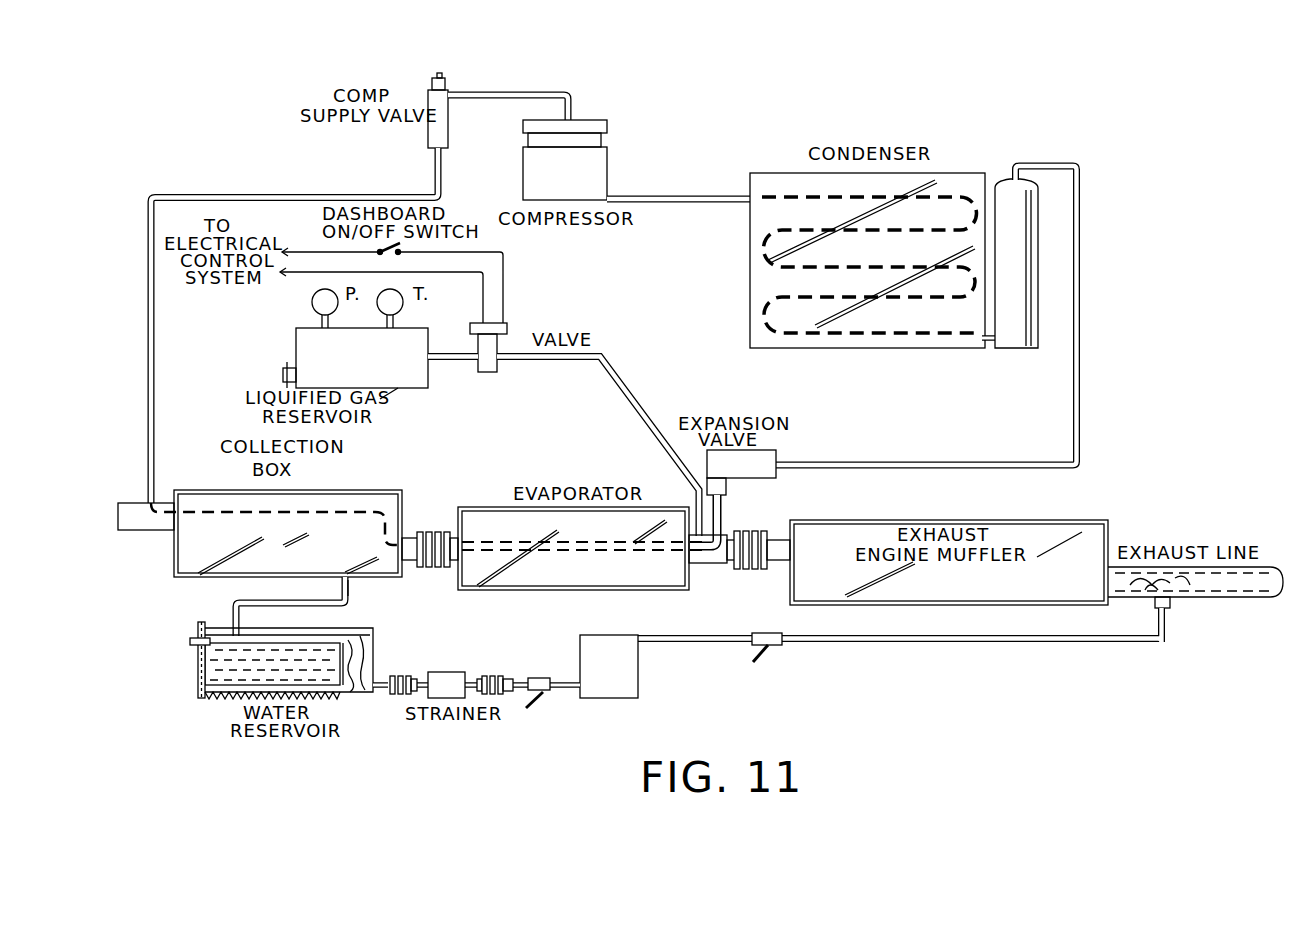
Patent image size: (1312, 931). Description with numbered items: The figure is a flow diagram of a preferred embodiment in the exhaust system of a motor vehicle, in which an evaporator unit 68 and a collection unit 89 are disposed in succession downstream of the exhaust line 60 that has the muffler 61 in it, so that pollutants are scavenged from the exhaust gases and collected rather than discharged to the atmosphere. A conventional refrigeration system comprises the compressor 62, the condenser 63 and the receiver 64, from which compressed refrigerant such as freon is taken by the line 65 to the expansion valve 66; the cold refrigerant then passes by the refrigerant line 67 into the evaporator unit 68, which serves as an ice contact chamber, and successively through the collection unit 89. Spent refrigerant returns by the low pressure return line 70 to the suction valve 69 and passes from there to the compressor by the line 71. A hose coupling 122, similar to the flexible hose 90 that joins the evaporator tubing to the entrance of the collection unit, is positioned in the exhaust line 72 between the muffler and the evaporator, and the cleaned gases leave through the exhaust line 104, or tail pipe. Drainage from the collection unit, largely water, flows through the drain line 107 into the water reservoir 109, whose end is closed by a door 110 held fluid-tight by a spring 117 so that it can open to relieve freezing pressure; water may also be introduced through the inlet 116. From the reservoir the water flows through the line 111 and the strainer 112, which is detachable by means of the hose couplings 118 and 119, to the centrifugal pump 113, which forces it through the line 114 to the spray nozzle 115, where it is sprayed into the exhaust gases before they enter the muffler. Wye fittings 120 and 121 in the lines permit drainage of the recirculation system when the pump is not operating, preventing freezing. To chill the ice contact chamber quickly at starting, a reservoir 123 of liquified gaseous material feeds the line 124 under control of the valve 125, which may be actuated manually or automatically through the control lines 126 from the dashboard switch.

The exhaust line 60 is at (1145, 599).
The muffler 61 is at (1000, 528).
The compressor 62 is at (604, 168).
The condenser 63 is at (756, 274).
The receiver 64 is at (1008, 341).
The line 65 is at (1072, 422).
The expansion valve 66 is at (768, 455).
The refrigerant line 67 is at (722, 520).
The evaporator unit 68 is at (620, 592).
The suction valve 69 is at (428, 138).
The low pressure return line 70 is at (156, 320).
The line 71 is at (519, 73).
The exhaust line 72 is at (713, 565).
The collection unit 89 is at (170, 556).
The flexible tubing or hose 90 is at (428, 535).
The exhaust line 104 is at (130, 503).
The drain line 107 is at (350, 596).
The water reservoir 109 is at (333, 691).
The door 110 is at (198, 676).
The line 111 is at (385, 692).
The strainer 112 is at (436, 672).
The centrifugal pump 113 is at (626, 690).
The line 114 is at (980, 645).
The spray nozzle 115 is at (1168, 612).
The inlet 116 is at (190, 644).
The spring 117 is at (221, 700).
The hose coupling 118 is at (405, 676).
The hose coupling 119 is at (499, 676).
The wye fitting 120 is at (772, 648).
The wye fitting 121 is at (545, 697).
The hose coupling 122 is at (745, 568).
The reservoir 123 is at (430, 372).
The line 124 is at (634, 411).
The valve 125 is at (500, 346).
The control lines 126 is at (456, 262).